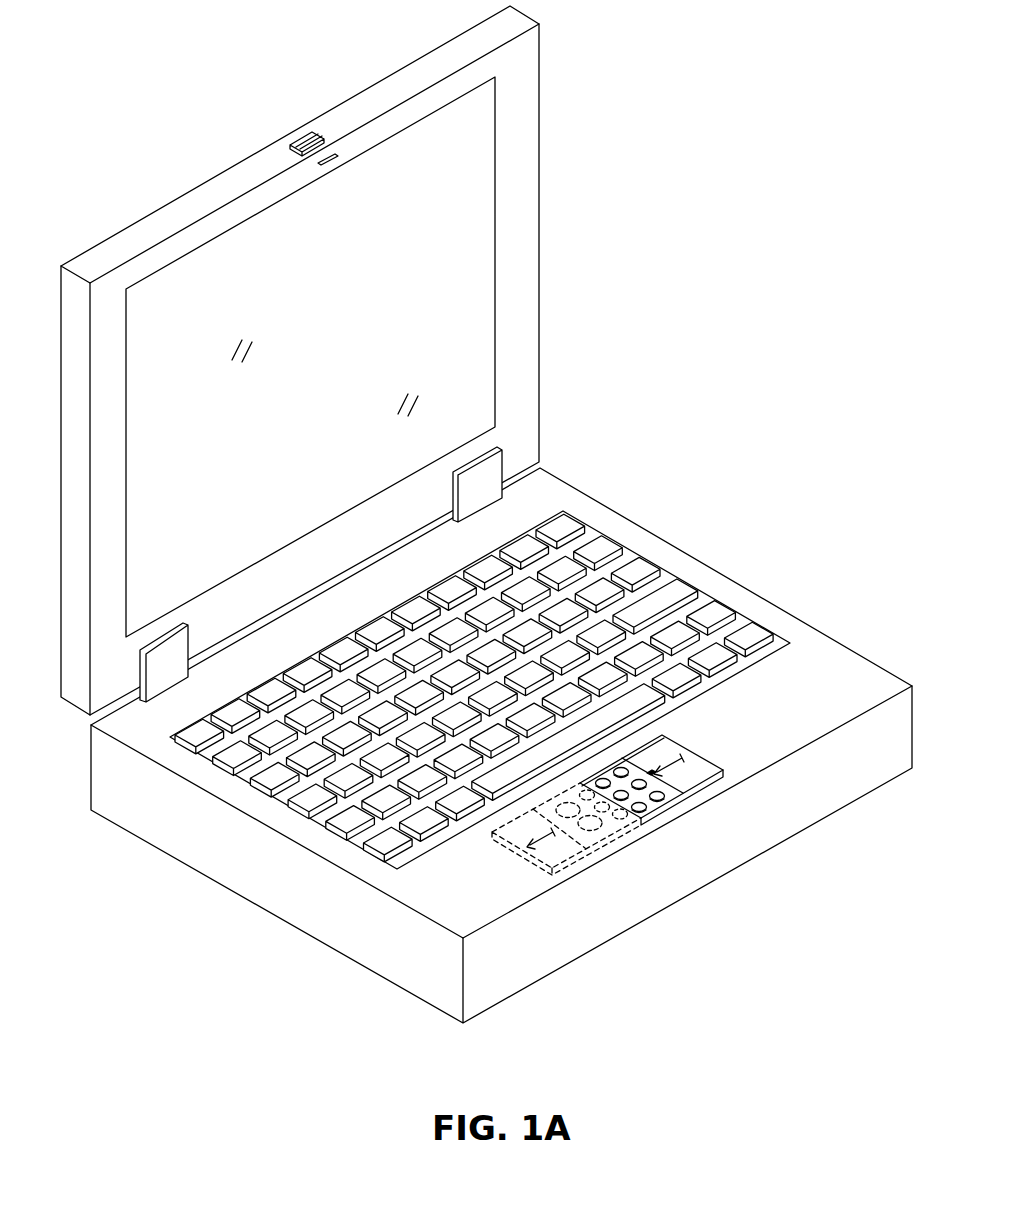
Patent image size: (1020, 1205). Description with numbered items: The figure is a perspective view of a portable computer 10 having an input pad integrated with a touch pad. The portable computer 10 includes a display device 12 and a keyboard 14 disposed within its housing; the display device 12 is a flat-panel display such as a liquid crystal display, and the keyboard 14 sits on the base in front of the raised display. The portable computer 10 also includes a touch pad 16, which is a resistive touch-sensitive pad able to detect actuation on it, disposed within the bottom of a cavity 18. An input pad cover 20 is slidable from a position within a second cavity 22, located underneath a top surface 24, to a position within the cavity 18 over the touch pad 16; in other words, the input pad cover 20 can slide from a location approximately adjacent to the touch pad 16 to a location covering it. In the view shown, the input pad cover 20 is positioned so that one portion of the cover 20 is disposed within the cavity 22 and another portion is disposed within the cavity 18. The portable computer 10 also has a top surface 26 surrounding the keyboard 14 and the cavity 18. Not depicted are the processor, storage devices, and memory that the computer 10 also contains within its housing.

The portable computer 10 is at (486, 515).
The display device 12 is at (518, 212).
The keyboard 14 is at (312, 797).
The touch pad 16 is at (678, 866).
The cavity 18 is at (665, 733).
The input pad cover 20 is at (687, 777).
The cavity 22 is at (553, 850).
The top surface 24 is at (501, 746).
The top surface 26 is at (827, 665).